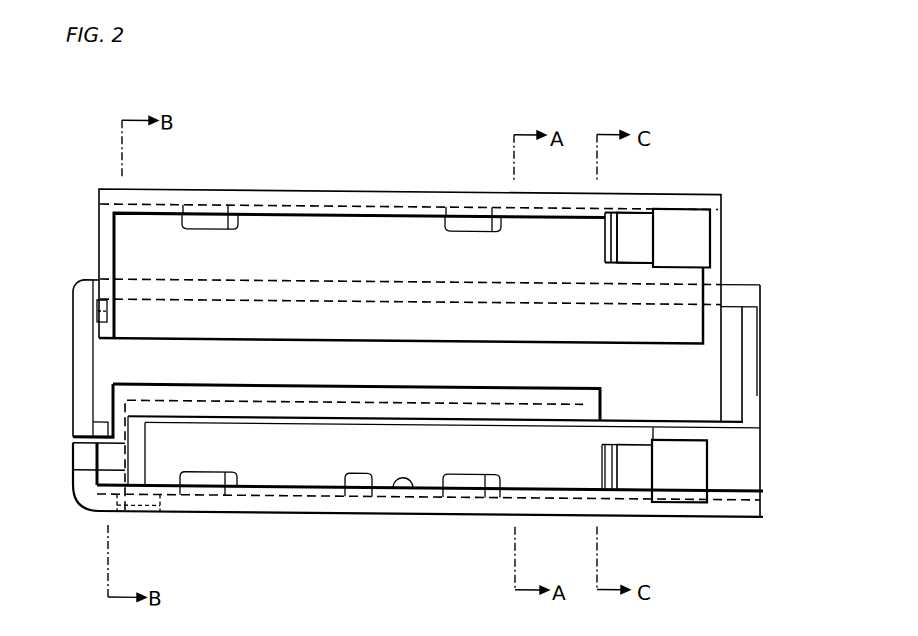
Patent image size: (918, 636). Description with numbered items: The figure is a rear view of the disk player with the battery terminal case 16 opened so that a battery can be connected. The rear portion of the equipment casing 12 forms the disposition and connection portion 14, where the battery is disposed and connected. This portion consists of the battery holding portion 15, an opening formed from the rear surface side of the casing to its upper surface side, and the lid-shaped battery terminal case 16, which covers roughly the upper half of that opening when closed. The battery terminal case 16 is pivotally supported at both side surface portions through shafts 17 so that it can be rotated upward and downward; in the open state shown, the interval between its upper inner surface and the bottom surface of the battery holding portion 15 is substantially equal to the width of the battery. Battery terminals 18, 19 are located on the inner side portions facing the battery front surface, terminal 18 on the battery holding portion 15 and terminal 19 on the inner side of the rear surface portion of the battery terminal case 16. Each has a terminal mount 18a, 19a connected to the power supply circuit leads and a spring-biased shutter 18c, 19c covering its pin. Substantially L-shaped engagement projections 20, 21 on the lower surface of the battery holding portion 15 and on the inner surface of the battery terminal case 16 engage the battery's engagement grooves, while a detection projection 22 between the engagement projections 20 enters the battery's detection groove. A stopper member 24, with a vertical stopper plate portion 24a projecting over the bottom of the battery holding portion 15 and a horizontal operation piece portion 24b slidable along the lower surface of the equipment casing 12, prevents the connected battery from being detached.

The equipment casing 12 is at (73, 371).
The disposition and connection portion 14 is at (127, 358).
The battery holding portion 15 is at (403, 475).
The battery terminal case 16 is at (345, 189).
The shaft 17 is at (90, 313).
The battery terminal 18 is at (707, 452).
The terminal mount 18a is at (690, 475).
The shutter 18c is at (633, 472).
The battery terminal 19 is at (711, 233).
The terminal mount 19a is at (688, 224).
The shutter 19c is at (632, 228).
The engagement projection 20 is at (212, 477).
The engagement projection 21 is at (207, 221).
The detection projection 22 is at (358, 480).
The stopper member 24 is at (93, 469).
The stopper plate portion 24a is at (135, 448).
The operation piece portion 24b is at (140, 497).